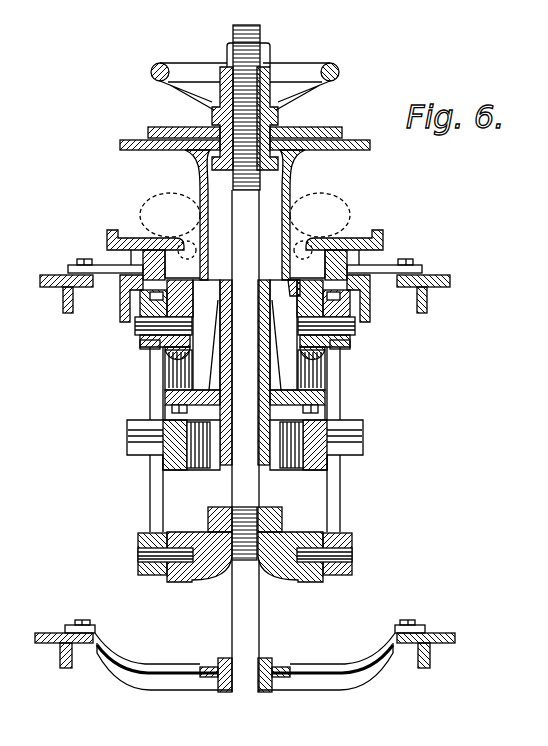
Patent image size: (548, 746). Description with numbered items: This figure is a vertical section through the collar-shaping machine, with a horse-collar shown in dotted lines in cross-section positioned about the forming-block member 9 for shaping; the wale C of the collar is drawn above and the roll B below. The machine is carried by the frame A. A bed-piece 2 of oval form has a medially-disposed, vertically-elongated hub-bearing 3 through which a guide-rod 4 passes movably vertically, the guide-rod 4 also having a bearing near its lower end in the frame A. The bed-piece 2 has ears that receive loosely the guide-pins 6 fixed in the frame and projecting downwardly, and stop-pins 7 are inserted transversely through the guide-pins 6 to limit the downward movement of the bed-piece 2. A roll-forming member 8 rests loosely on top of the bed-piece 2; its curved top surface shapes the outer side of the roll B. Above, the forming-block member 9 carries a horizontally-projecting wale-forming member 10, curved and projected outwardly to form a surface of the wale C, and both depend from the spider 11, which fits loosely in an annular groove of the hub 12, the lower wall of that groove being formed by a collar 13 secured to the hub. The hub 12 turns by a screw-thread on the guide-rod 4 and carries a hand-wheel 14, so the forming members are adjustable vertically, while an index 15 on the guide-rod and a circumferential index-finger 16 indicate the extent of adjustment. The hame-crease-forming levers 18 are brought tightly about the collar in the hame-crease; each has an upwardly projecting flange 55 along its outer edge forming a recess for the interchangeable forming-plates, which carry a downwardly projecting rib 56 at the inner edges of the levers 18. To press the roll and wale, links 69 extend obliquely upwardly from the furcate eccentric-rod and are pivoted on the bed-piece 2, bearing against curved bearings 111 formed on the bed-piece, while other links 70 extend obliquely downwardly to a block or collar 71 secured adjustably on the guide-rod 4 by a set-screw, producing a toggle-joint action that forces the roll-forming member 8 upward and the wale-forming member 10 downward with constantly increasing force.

The index 15 is at (262, 34).
The index-finger 16 is at (271, 55).
The hand-wheel 14 is at (335, 66).
The hub 12 is at (276, 106).
The spider 11 is at (302, 128).
The wale-forming member 10 is at (349, 151).
The collar 13 is at (207, 170).
The forming-block member 9 is at (290, 184).
The wale C is at (245, 215).
The roll B is at (245, 250).
The flange 55 is at (113, 236).
The rib 56 is at (172, 251).
The hame-crease-forming levers 18 is at (117, 251).
The guide-pins 6 is at (119, 293).
The curved bearings 111 is at (122, 313).
The bed-piece 2 is at (192, 311).
The roll-forming member 8 is at (295, 291).
The guide-rod 4 is at (252, 602).
The hub-bearing 3 is at (219, 358).
The stop-pins 7 is at (131, 345).
The links 69 is at (150, 372).
The links 70 is at (150, 485).
The block or collar 71 is at (280, 511).
The frame A is at (62, 306).